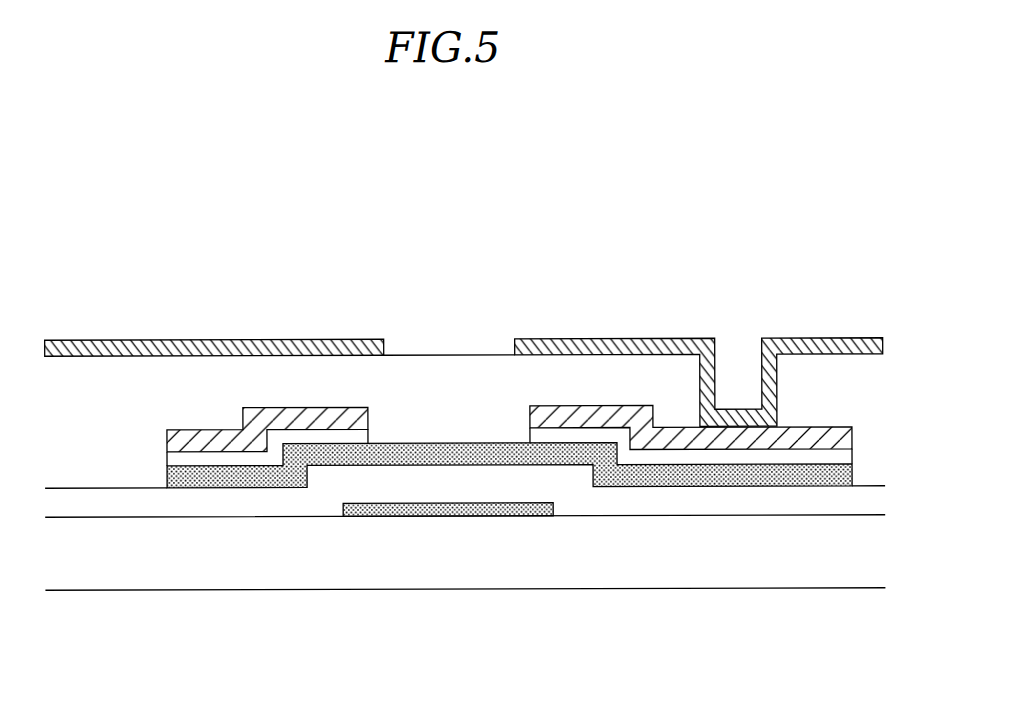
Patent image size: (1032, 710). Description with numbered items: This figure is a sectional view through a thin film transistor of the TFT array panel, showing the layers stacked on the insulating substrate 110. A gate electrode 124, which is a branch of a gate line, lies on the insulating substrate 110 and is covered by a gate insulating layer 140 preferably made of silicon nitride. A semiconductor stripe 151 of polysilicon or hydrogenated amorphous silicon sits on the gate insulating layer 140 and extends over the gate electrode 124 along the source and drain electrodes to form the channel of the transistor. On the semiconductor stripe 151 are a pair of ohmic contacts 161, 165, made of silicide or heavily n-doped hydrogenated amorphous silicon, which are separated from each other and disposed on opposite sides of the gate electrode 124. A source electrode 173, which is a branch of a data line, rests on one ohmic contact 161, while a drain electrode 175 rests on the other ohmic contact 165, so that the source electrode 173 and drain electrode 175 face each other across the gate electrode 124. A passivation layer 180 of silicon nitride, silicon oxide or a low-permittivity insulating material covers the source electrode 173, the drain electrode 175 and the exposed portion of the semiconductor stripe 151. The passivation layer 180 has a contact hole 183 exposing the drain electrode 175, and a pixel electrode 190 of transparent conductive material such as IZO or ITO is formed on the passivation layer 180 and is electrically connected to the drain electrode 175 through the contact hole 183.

The insulating substrate 110 is at (640, 575).
The gate electrode 124 is at (425, 508).
The gate insulating layer 140 is at (278, 510).
The semiconductor stripe 151 is at (727, 468).
The ohmic contact 161 is at (329, 437).
The ohmic contact 165 is at (560, 435).
The source electrode 173 is at (268, 407).
The drain electrode 175 is at (641, 412).
The passivation layer 180 is at (441, 364).
The contact hole 183 is at (743, 337).
The pixel electrode 190 is at (152, 339).